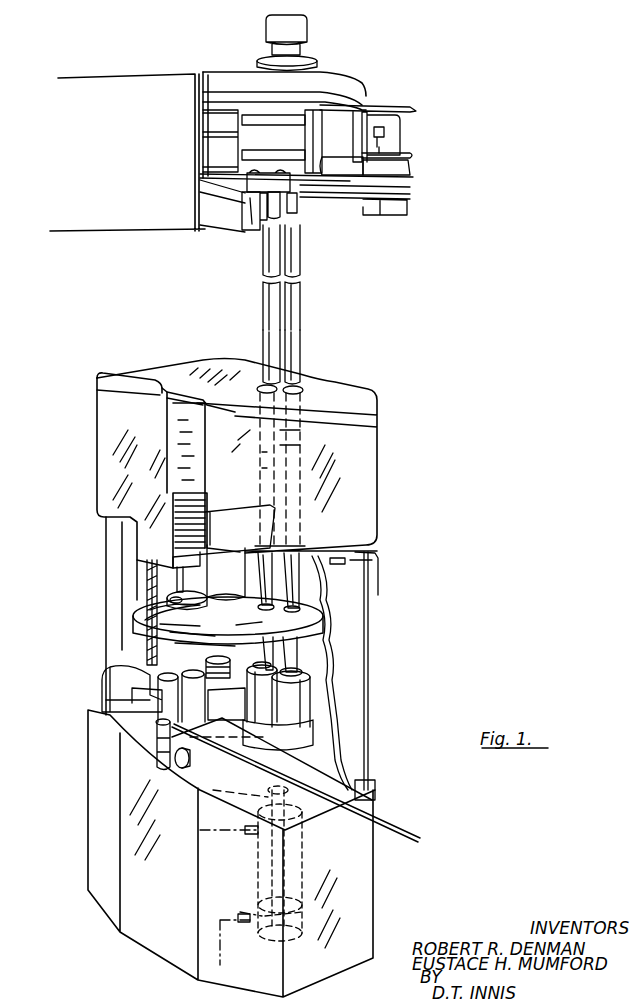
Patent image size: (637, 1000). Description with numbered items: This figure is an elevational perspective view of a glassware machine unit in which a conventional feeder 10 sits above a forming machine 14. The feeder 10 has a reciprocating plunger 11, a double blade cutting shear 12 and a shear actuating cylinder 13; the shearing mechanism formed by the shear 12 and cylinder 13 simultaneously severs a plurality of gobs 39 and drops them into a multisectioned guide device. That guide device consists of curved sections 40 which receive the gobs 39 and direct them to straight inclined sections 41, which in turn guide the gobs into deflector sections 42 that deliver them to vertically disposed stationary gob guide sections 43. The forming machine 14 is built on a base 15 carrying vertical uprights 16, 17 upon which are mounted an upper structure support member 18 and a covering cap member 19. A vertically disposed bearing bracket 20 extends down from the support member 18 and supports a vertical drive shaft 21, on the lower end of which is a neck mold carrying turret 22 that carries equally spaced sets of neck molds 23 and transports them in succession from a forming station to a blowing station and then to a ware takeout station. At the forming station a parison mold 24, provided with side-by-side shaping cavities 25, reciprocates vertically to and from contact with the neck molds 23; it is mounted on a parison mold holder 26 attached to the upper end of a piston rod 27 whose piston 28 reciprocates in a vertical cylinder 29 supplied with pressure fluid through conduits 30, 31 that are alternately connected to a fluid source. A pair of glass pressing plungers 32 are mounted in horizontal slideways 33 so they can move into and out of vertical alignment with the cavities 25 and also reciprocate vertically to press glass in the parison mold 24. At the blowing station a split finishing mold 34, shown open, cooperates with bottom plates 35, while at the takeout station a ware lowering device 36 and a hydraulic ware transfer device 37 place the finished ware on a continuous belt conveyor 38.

The feeder 10 is at (124, 128).
The reciprocating plunger 11 is at (300, 30).
The double blade cutting shear 12 is at (247, 176).
The shear actuating cylinder 13 is at (345, 165).
The forming machine 14 is at (400, 452).
The base 15 is at (103, 797).
The vertical upright 16 is at (122, 583).
The vertical upright 17 is at (376, 556).
The upper structure support member 18 is at (115, 445).
The covering cap member 19 is at (100, 380).
The bearing bracket 20 is at (238, 580).
The drive shaft 21 is at (247, 617).
The neck mold carrying turret 22 is at (343, 620).
The neck molds 23 is at (305, 598).
The parison mold 24 is at (265, 707).
The shaping cavities 25 is at (268, 650).
The parison mold holder 26 is at (295, 740).
The piston rod 27 is at (300, 825).
The piston 28 is at (305, 912).
The vertical cylinder 29 is at (305, 870).
The conduit 30 is at (248, 838).
The conduit 31 is at (245, 925).
The glass pressing plungers 32 is at (347, 565).
The horizontal slideways 33 is at (224, 536).
The split finishing mold 34 is at (150, 652).
The bottom plates 35 is at (340, 695).
The ware lowering device 36 is at (157, 733).
The hydraulic ware transfer device 37 is at (105, 678).
The continuous belt conveyor 38 is at (395, 780).
The gobs 39 is at (292, 208).
The curved sections 40 is at (292, 262).
The straight inclined sections 41 is at (290, 312).
The deflector sections 42 is at (290, 362).
The stationary gob guide sections 43 is at (295, 445).